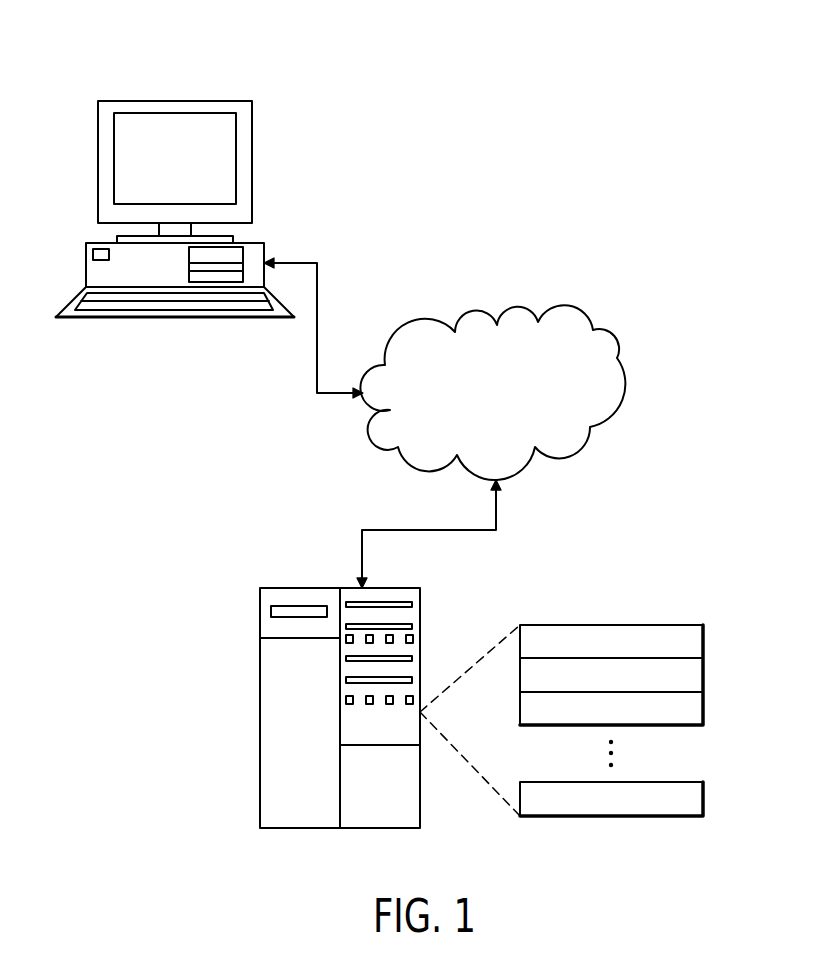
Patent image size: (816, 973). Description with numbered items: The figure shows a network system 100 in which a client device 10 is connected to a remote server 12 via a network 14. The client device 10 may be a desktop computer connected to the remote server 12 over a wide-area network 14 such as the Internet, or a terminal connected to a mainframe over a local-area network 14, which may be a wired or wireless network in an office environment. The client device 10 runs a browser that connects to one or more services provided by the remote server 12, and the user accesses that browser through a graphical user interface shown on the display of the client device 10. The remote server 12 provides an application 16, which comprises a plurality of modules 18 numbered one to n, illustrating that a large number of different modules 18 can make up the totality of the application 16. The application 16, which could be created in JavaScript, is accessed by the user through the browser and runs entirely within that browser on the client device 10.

The network system 100 is at (430, 112).
The client device 10 is at (252, 133).
The network 14 is at (615, 350).
The remote server 12 is at (260, 760).
The application 16 is at (626, 589).
The modules 18 is at (703, 673).